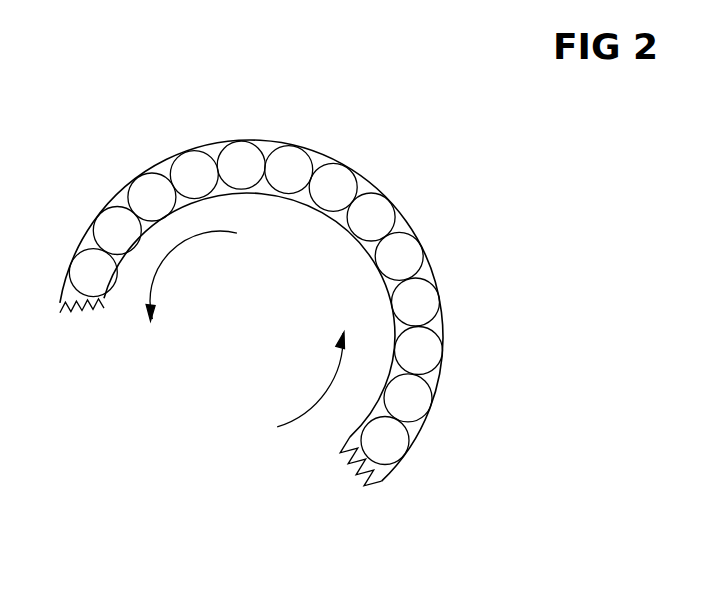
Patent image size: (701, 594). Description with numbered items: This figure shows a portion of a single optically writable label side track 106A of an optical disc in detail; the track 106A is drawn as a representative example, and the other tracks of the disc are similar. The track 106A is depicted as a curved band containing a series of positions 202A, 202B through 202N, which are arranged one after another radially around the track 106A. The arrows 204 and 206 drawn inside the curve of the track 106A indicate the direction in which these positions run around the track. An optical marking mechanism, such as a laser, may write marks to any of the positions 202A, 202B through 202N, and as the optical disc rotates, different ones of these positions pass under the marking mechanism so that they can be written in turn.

The track 106A is at (376, 477).
The position 202A is at (340, 168).
The position 202B is at (283, 159).
The position 202N is at (405, 450).
The arrow 204 is at (183, 257).
The arrow 206 is at (300, 420).